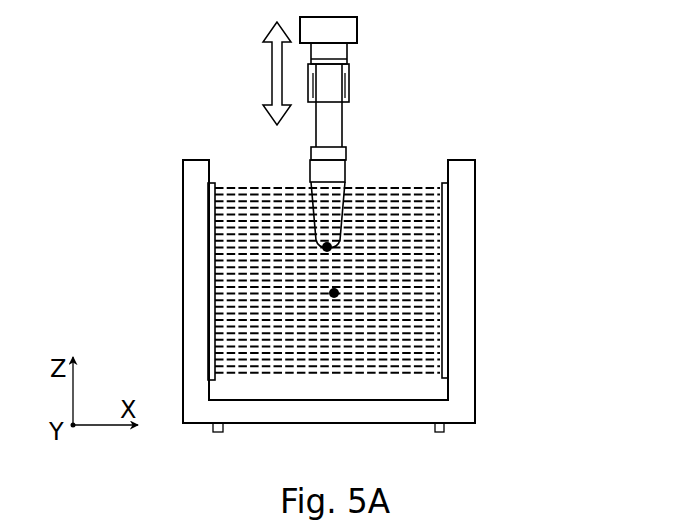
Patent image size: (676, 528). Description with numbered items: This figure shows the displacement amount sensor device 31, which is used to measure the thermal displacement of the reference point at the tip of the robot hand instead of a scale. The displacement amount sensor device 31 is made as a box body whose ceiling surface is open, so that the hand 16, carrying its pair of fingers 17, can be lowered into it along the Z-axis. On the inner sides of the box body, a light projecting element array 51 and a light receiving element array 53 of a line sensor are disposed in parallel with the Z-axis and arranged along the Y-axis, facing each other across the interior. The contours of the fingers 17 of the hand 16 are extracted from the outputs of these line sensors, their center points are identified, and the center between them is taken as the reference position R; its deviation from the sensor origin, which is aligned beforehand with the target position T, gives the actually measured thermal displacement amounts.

The hand 16 is at (356, 104).
The fingers 17 is at (336, 201).
The displacement amount sensor device 31 is at (350, 277).
The light projecting element array 51 is at (208, 307).
The light receiving element array 53 is at (448, 238).